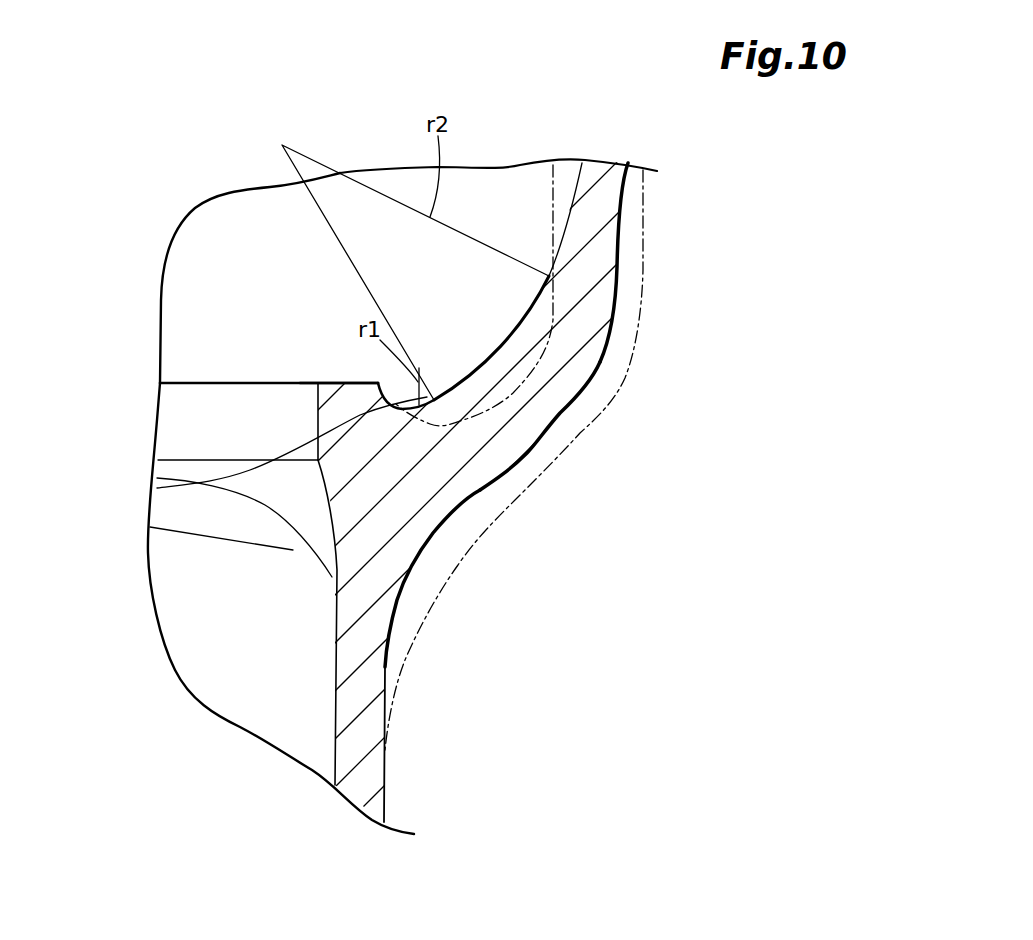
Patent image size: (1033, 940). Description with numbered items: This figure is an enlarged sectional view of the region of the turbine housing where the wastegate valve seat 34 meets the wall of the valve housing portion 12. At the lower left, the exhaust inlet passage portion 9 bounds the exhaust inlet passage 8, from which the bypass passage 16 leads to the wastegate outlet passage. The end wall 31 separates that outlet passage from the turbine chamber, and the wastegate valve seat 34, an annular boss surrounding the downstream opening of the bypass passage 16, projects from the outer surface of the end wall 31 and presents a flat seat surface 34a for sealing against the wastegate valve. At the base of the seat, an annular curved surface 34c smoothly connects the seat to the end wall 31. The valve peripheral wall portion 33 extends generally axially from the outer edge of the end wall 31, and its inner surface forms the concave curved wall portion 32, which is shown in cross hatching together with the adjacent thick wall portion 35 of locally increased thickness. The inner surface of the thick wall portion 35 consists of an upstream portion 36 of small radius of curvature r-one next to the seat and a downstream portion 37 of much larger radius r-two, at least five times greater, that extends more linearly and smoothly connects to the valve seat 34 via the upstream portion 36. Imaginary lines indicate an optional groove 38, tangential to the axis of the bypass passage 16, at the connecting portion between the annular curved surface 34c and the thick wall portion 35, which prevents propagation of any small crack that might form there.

The exhaust inlet passage 8 is at (250, 653).
The exhaust inlet passage portion 9 is at (400, 665).
The valve housing portion 12 is at (577, 431).
The bypass passage 16 is at (248, 433).
The end wall 31 is at (370, 443).
The curved wall portion 32 is at (580, 380).
The valve peripheral wall portion 33 is at (603, 212).
The wastegate valve seat 34 is at (217, 370).
The seat surface 34a is at (339, 382).
The annular curved surface 34c is at (393, 402).
The thick wall portion 35 is at (480, 380).
The upstream portion 36 is at (428, 400).
The downstream portion 37 is at (510, 342).
The groove 38 is at (150, 487).